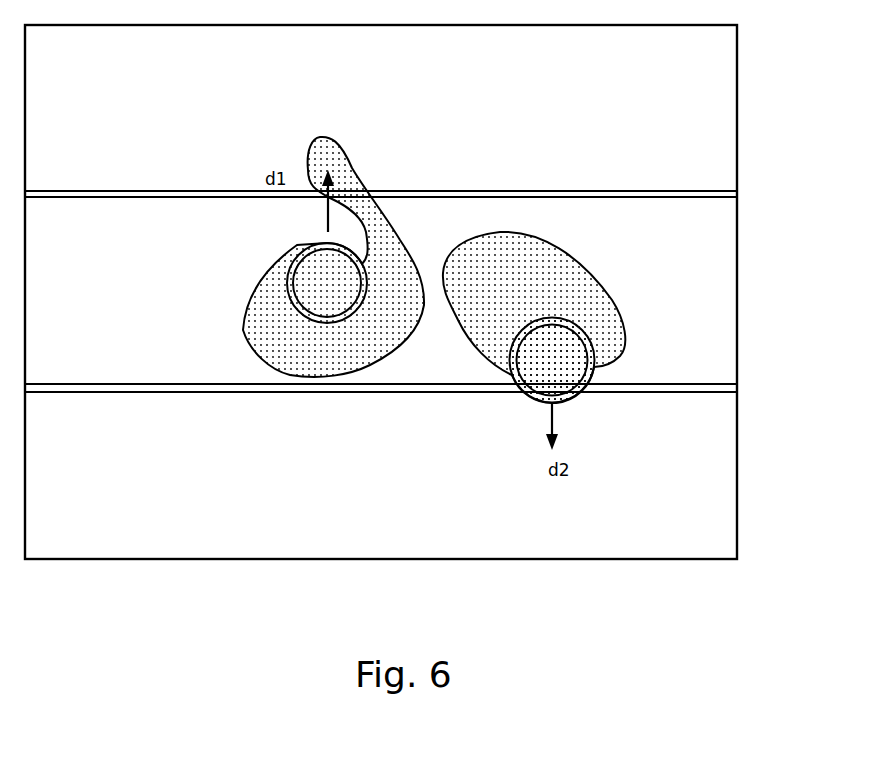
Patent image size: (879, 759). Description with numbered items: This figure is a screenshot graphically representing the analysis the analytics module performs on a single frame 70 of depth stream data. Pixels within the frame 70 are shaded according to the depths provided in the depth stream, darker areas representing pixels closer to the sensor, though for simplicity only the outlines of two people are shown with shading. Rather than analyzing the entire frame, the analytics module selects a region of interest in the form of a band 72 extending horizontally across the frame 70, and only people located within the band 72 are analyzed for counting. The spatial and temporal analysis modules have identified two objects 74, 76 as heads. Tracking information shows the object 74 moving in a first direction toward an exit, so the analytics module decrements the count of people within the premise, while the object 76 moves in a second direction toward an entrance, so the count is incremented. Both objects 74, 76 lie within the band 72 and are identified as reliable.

The frame 70 is at (738, 52).
The band 72 is at (743, 197).
The object 74 is at (373, 277).
The object 76 is at (585, 333).